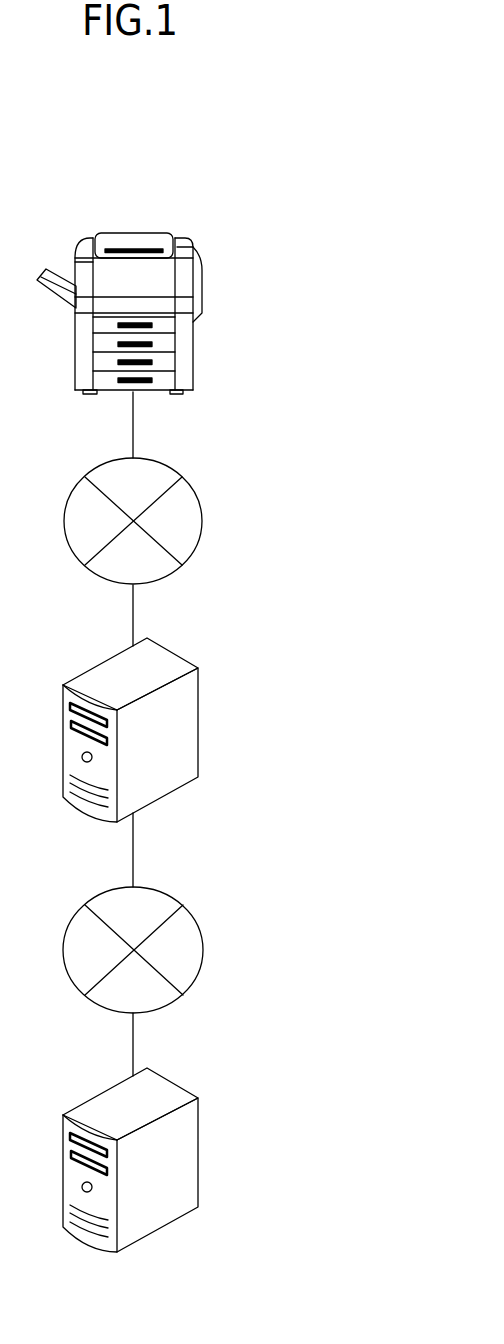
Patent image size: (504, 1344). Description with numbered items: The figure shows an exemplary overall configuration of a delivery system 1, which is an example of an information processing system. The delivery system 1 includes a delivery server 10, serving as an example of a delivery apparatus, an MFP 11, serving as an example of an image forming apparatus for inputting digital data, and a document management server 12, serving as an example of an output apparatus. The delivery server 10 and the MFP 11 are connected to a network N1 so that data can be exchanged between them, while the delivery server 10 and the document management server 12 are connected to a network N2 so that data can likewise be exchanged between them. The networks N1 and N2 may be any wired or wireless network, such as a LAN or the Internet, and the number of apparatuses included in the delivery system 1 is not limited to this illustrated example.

The delivery system 1 is at (347, 142).
The MFP (Multi-Function Peripheral) 11 is at (182, 236).
The network N1 is at (167, 463).
The delivery server 10 is at (180, 655).
The network N2 is at (168, 890).
The document management server 12 is at (180, 1085).